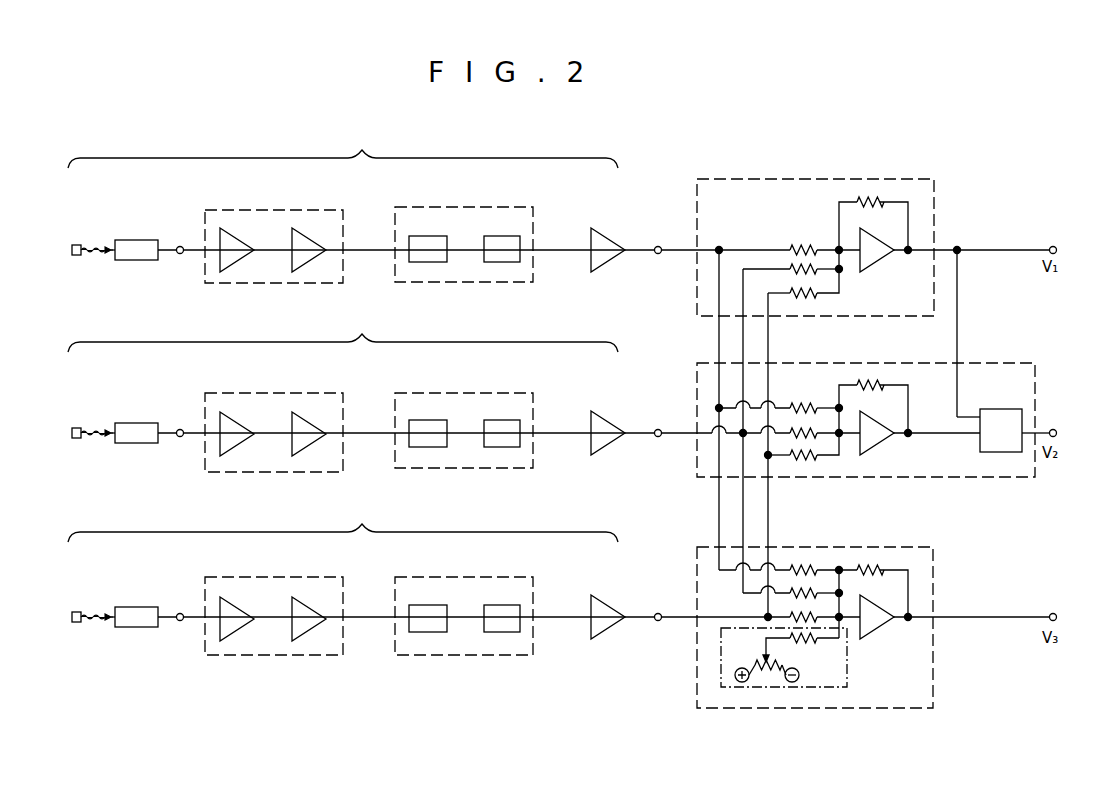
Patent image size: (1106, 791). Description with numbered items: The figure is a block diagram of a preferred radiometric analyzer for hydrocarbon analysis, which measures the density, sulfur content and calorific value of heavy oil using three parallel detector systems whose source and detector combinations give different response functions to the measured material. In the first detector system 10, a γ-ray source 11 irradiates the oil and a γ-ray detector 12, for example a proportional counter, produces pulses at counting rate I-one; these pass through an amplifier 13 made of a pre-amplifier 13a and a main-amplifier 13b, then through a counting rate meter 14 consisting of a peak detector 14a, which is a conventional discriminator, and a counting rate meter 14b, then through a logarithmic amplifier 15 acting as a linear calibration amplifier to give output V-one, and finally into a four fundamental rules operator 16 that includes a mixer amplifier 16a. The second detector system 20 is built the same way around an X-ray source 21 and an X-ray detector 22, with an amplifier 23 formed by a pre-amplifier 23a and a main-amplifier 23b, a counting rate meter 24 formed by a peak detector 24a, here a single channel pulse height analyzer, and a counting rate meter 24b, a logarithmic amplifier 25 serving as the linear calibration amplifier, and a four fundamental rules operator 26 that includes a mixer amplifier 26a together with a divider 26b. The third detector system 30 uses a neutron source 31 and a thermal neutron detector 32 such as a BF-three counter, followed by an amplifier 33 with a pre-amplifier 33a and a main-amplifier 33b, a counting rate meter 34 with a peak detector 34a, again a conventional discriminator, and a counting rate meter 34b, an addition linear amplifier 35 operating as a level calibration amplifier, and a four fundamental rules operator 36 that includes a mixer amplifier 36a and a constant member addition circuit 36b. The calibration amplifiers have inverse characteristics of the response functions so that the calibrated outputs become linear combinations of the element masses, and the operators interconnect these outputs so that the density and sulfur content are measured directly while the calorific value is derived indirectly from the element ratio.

The first detector system 10 is at (374, 144).
The γ-ray source 11 is at (77, 245).
The γ-ray detector 12 is at (136, 240).
The amplifier 13 is at (250, 210).
The pre-amplifier 13a is at (252, 242).
The main-amplifier 13b is at (324, 242).
The counting rate meter 14 is at (452, 207).
The peak detector 14a is at (425, 236).
The counting rate meter 14b is at (501, 236).
The logarithmic amplifier 15 is at (606, 240).
The four fundamental rules operator 16 is at (802, 179).
The mixer amplifier 16a is at (882, 256).
The second detector system 20 is at (374, 328).
The X-ray source 21 is at (77, 428).
The X-ray detector 22 is at (129, 423).
The amplifier 23 is at (250, 393).
The pre-amplifier 23a is at (256, 424).
The main-amplifier 23b is at (326, 424).
The counting rate meter 24 is at (452, 393).
The peak detector 24a is at (427, 420).
The counting rate meter 24b is at (499, 420).
The logarithmic amplifier 25 is at (612, 425).
The four fundamental rules operator 26 is at (800, 363).
The mixer amplifier 26a is at (882, 441).
The divider 26b is at (994, 409).
The third detector system 30 is at (374, 514).
The neutron source 31 is at (77, 612).
The thermal neutron detector 32 is at (129, 607).
The amplifier 33 is at (250, 577).
The pre-amplifier 33a is at (256, 610).
The main-amplifier 33b is at (326, 610).
The counting rate meter 34 is at (452, 577).
The peak detector 34a is at (427, 605).
The counting rate meter 34b is at (499, 605).
The addition linear amplifier 35 is at (612, 609).
The four fundamental rules operator 36 is at (800, 547).
The mixer amplifier 36a is at (882, 625).
The constant member addition circuit 36b is at (848, 678).